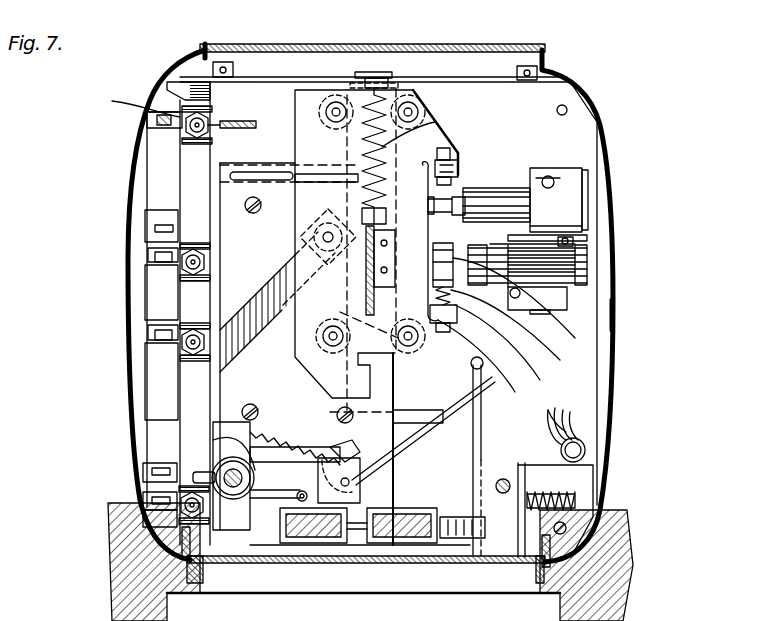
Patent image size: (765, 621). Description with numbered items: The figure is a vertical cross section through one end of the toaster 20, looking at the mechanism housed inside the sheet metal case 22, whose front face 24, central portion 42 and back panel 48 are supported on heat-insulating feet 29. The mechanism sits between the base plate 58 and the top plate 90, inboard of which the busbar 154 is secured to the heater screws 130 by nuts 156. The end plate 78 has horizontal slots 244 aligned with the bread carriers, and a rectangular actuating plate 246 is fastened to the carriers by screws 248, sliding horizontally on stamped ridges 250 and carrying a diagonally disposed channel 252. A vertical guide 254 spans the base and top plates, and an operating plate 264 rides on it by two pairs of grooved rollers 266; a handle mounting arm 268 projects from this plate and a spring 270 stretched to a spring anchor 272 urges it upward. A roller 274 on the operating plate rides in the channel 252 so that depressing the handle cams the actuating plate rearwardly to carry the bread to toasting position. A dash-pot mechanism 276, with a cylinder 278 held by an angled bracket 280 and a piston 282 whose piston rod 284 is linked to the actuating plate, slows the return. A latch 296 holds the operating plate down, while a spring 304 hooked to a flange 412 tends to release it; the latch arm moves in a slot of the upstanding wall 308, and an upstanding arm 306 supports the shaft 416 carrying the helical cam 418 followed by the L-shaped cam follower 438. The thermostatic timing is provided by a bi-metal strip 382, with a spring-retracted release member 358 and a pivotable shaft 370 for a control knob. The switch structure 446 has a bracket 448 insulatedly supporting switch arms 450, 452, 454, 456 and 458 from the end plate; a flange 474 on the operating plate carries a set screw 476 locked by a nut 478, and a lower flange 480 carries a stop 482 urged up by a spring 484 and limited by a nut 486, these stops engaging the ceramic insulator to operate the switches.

The toaster 20 is at (620, 133).
The sheet metal case 22 is at (616, 187).
The front face 24 is at (122, 283).
The feet 29 is at (118, 552).
The central portion of toaster case 42 is at (503, 80).
The back panel 48 is at (617, 318).
The base plate 58 is at (328, 565).
The end plate 78 is at (542, 97).
The top plate 90 is at (514, 47).
The screws 130 is at (127, 103).
The busbar 154 is at (185, 158).
The nuts 156 is at (186, 125).
The horizontal slots 244 is at (420, 417).
The actuating plate 246 is at (220, 295).
The screws 248 is at (258, 212).
The stamped ridges 250 is at (243, 172).
The diagonally disposed channel 252 is at (238, 300).
The vertical guide 254 is at (380, 367).
The operating plate 264 is at (300, 100).
The rollers 266 is at (336, 100).
The handle mounting arm 268 is at (366, 280).
The spring 270 is at (445, 147).
The spring anchor 272 is at (384, 72).
The roller 274 is at (300, 250).
The dash-pot mechanism 276 is at (543, 166).
The cylinder 278 is at (496, 183).
The angled bracket 280 is at (572, 182).
The piston 282 is at (500, 170).
The piston rod 284 is at (440, 212).
The latch 296 is at (440, 430).
The spring 304 is at (262, 428).
The upstanding arm 306 is at (298, 505).
The upstanding wall 308 is at (478, 440).
The release member 358 is at (545, 480).
The pivotable shaft 370 is at (535, 523).
The bi-metal strip 382 is at (448, 515).
The flange of angle bracket 412 is at (393, 214).
The shaft 416 is at (220, 438).
The cam 418 is at (200, 514).
The L-shaped cam follower 438 is at (212, 476).
The switch structure 446 is at (584, 267).
The bracket 448 is at (548, 300).
The top switch arm 450 is at (592, 208).
The second switch arm 452 is at (577, 256).
The third switch arm 454 is at (582, 263).
The fourth switch arm 456 is at (578, 272).
The fifth switch arm 458 is at (578, 282).
The flange 474 is at (455, 197).
The set screw 476 is at (432, 142).
The locking nut 478 is at (462, 170).
The flange 480 is at (511, 348).
The stop 482 is at (516, 306).
The spring 484 is at (515, 332).
The nut 486 is at (489, 363).